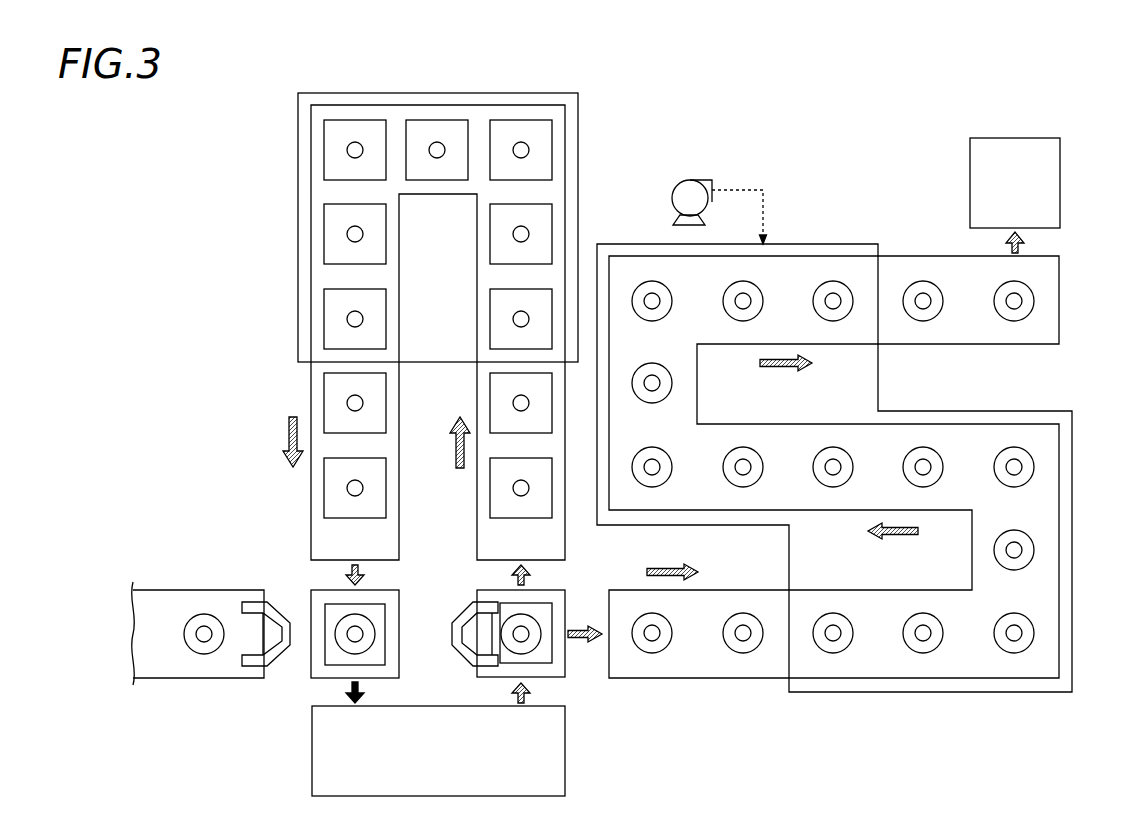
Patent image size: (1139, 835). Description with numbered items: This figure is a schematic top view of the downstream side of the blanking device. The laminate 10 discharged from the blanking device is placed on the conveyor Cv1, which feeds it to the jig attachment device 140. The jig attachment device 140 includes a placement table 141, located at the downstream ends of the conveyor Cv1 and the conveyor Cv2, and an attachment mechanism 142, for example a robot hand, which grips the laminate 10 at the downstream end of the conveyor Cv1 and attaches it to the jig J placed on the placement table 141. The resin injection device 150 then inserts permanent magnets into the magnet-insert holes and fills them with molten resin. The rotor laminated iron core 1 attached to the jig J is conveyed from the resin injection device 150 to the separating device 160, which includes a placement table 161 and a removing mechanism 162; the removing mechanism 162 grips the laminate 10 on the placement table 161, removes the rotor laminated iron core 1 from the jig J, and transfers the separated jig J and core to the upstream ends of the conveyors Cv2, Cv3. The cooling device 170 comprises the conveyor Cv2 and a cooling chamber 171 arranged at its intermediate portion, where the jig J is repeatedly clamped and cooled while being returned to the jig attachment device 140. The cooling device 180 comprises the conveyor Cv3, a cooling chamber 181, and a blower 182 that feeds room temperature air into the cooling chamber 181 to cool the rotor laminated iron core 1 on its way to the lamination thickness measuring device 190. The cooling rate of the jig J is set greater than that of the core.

The rotor laminated iron core 1 is at (544, 601).
The laminate 10 is at (175, 617).
The jig attachment device 140 is at (296, 589).
The placement table 141 is at (392, 604).
The attachment mechanism 142 is at (248, 668).
The resin injection device 150 is at (584, 768).
The separating device 160 is at (576, 593).
The placement table 161 is at (553, 678).
The removing mechanism 162 is at (458, 656).
The cooling device 170 is at (278, 198).
The cooling chamber 171 is at (298, 133).
The cooling device 180 is at (787, 155).
The cooling chamber 181 is at (620, 244).
The blower 182 is at (695, 180).
The lamination thickness measuring device 190 is at (1060, 190).
The conveyor Cv1 is at (187, 603).
The conveyor Cv2 is at (311, 499).
The conveyor Cv3 is at (633, 678).
The jig J is at (397, 652).